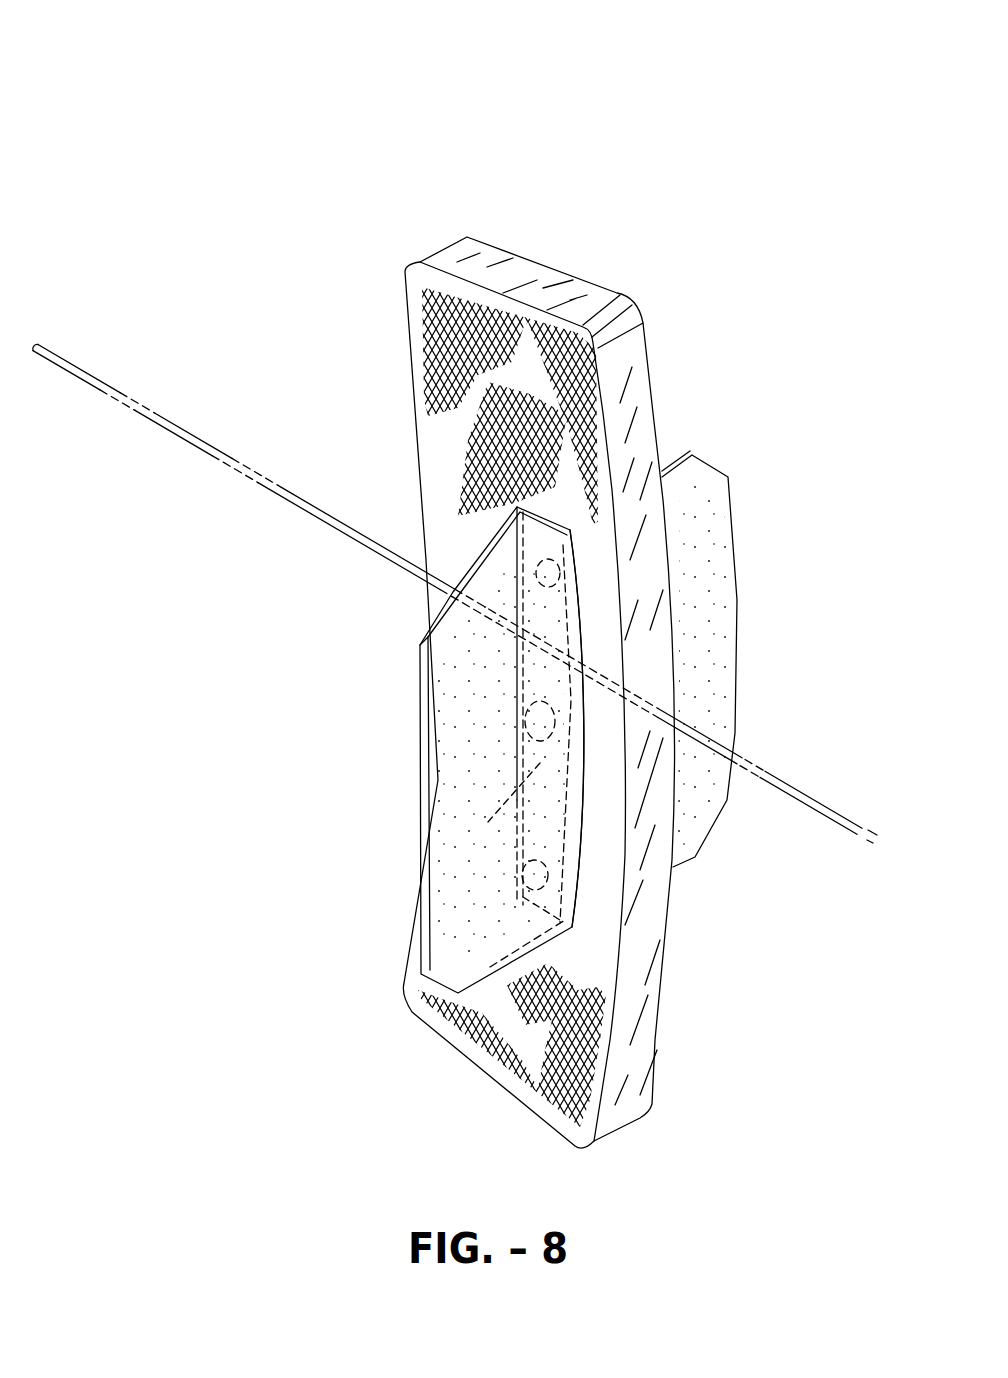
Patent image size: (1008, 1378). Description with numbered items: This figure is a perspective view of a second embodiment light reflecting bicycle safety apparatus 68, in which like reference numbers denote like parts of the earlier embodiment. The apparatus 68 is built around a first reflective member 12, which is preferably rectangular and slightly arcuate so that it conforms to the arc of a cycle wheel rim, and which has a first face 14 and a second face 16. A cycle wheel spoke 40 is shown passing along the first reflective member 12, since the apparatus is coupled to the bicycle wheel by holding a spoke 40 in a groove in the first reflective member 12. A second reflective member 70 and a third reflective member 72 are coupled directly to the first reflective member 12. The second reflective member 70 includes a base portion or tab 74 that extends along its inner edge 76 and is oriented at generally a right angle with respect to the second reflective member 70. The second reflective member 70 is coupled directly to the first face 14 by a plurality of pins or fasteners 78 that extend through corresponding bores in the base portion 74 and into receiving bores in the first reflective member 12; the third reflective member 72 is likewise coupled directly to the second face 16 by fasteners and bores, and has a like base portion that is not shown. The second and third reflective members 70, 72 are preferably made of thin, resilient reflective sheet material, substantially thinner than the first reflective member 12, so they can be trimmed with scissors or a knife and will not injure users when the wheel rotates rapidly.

The light reflecting bicycle safety apparatus 68 is at (280, 104).
The first reflective member 12 is at (432, 252).
The first face 14 is at (560, 1060).
The second face 16 is at (702, 996).
The cycle wheel spoke 40 is at (173, 424).
The second reflective member 70 is at (464, 712).
The third reflective member 72 is at (722, 582).
The base portion 74 is at (520, 522).
The inner edge 76 is at (577, 567).
The fasteners 78 is at (520, 896).